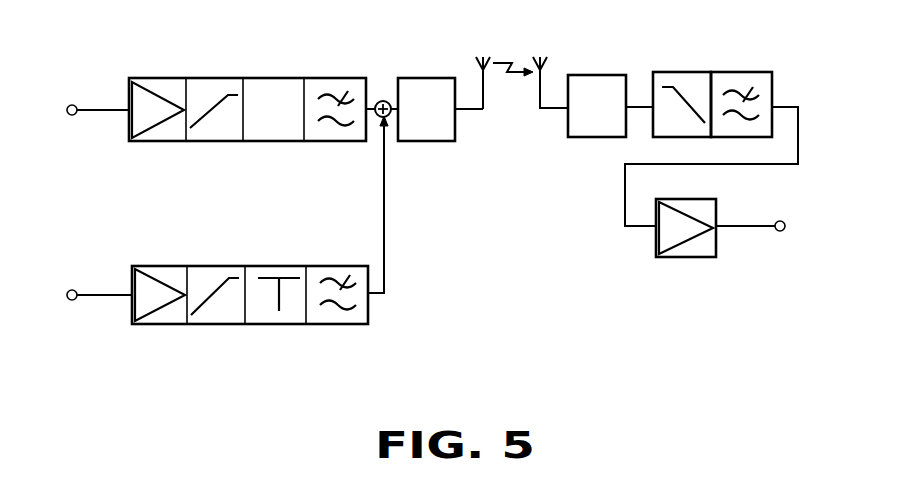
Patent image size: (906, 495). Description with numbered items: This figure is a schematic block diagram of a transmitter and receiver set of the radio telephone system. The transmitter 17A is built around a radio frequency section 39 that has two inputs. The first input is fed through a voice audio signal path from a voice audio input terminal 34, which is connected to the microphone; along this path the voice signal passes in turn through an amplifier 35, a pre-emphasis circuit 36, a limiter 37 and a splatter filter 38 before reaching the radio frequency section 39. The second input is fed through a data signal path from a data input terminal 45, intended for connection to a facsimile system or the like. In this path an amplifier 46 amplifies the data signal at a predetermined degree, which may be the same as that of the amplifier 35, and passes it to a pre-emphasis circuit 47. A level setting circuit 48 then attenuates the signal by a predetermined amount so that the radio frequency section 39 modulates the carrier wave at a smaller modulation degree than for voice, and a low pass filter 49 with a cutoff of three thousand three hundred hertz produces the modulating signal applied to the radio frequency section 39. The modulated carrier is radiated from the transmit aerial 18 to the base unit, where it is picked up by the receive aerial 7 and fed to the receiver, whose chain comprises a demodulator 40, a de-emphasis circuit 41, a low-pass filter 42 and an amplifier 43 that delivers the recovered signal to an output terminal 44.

The transmitter 17A is at (244, 28).
The voice audio input terminal 34 is at (72, 115).
The amplifier 35 is at (151, 141).
The pre-emphasis circuit 36 is at (213, 141).
The limiter 37 is at (275, 141).
The splatter filter 38 is at (333, 141).
The radio frequency section 39 is at (422, 141).
The transmit aerial 18 is at (483, 94).
The receive aerial 7 is at (540, 88).
The demodulator 40 is at (585, 137).
The de-emphasis circuit 41 is at (673, 72).
The low-pass filter 42 is at (735, 72).
The amplifier 43 is at (683, 257).
The output terminal 44 is at (780, 231).
The data input terminal 45 is at (72, 300).
The amplifier 46 is at (155, 324).
The pre-emphasis circuit 47 is at (215, 324).
The level setting circuit 48 is at (280, 324).
The low pass filter 49 is at (340, 324).